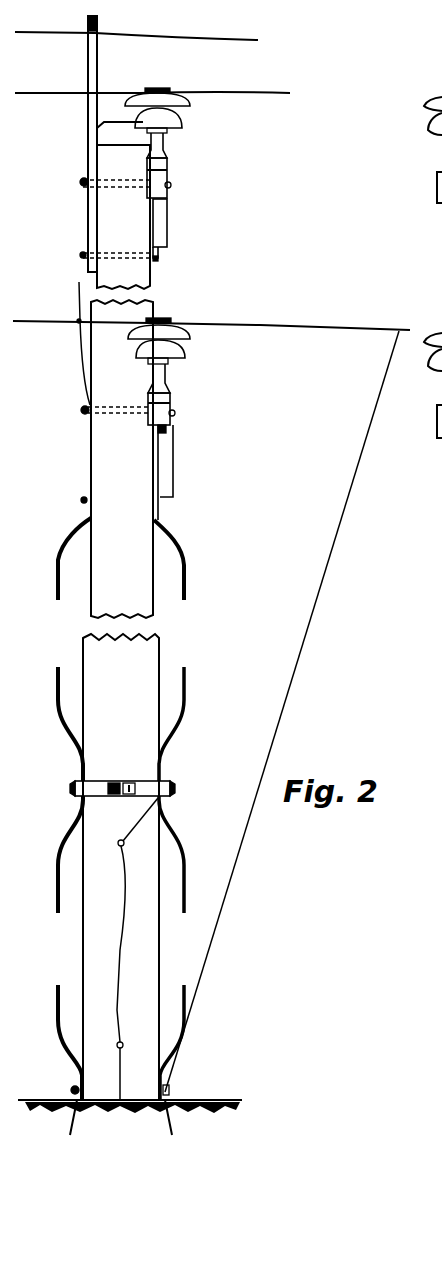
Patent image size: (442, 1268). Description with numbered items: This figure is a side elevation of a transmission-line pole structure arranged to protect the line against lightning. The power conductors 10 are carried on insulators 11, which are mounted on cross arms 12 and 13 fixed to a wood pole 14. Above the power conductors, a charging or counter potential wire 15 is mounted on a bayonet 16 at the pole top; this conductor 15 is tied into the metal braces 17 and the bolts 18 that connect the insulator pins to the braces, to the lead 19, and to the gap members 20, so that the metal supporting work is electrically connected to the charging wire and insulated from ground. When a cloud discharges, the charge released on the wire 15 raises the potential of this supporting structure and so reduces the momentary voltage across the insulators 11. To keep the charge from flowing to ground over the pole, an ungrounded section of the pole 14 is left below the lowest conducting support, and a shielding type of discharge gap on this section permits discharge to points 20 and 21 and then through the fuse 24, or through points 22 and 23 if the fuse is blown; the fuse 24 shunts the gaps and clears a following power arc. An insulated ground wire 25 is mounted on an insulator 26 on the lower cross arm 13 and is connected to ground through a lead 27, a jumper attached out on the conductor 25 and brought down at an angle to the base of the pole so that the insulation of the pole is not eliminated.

The power conductors 10 is at (236, 94).
The insulators 11 is at (182, 120).
The cross arm 12 is at (162, 175).
The cross arm 13 is at (164, 404).
The wood pole 14 is at (160, 648).
The charging or counter potential wire 15 is at (182, 33).
The bayonet 16 is at (97, 67).
The metal braces 17 is at (163, 226).
The bolts 18 is at (167, 481).
The lead 19 is at (79, 292).
The gap members 20 is at (199, 586).
The gap points 21 is at (58, 672).
The gap points 22 is at (58, 897).
The gap points 23 is at (58, 995).
The fuse 24 is at (145, 950).
The insulated ground wire 25 is at (55, 322).
The insulator 26 is at (188, 350).
The lead 27 is at (328, 565).